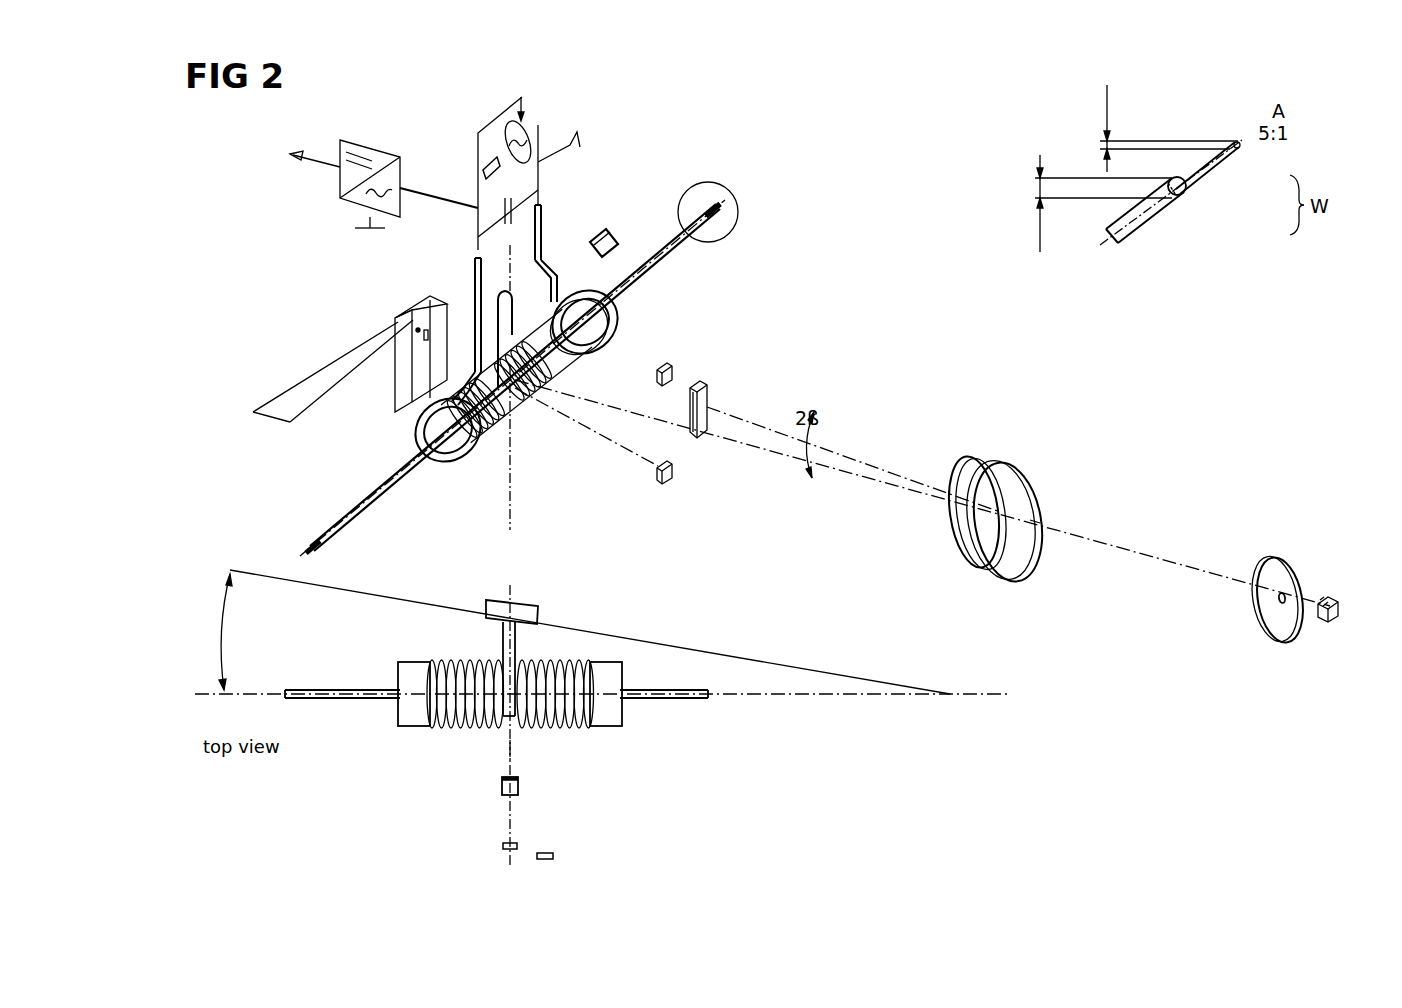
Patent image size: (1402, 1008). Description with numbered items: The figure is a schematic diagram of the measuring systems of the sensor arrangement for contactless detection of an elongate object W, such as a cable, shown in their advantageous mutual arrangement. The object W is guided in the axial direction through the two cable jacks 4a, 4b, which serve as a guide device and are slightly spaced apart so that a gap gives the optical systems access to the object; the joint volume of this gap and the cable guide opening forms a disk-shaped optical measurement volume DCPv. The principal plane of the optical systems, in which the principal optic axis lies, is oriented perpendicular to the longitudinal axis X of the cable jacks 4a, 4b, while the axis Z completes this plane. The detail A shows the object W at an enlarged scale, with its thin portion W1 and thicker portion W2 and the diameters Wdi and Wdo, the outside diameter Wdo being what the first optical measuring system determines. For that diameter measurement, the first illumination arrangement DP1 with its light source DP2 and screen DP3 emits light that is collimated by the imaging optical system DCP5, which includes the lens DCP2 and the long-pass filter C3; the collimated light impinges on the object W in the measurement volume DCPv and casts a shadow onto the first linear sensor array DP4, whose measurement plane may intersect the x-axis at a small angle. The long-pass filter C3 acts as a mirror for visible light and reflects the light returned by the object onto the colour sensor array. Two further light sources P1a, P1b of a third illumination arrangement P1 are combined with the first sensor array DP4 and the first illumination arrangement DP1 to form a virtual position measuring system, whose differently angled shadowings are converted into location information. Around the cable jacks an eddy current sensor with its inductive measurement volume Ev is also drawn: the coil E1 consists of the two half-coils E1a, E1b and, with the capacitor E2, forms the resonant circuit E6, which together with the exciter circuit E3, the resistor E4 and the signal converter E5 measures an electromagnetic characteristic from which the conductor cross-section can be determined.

The elongate object W is at (370, 489).
The thin wire portion W1 is at (1225, 171).
The thick wire portion W2 is at (1190, 210).
The inner wire diameter Wdi is at (1160, 128).
The outside diameter Wdo is at (1093, 203).
The cable jack 4a is at (448, 462).
The cable jack 4b is at (656, 319).
The inductive measurement volume Ev is at (452, 385).
The coil E1 is at (403, 305).
The half-coil E1a is at (390, 331).
The half-coil E1b is at (428, 253).
The capacitor E2 is at (505, 212).
The exciter circuit E3 is at (544, 173).
The resistor E4 is at (445, 133).
The signal converter E5 is at (340, 198).
The resonant circuit E6 is at (377, 301).
The linear sensor array DP4 is at (325, 366).
The z axis Z is at (497, 447).
The longitudinal axis X is at (732, 193).
The detail A is at (769, 220).
The disk-shaped optical measurement volume DCPv is at (919, 493).
The third illumination arrangement P1 is at (568, 805).
The light source P1a is at (706, 512).
The light source P1b is at (760, 339).
The lens DCP2 is at (1043, 460).
The long-pass filter C3 is at (1077, 488).
The imaging optical system DCP5 is at (1053, 490).
The first illumination arrangement DP1 is at (1254, 576).
The light source DP2 is at (1288, 531).
The screen DP3 is at (1239, 564).